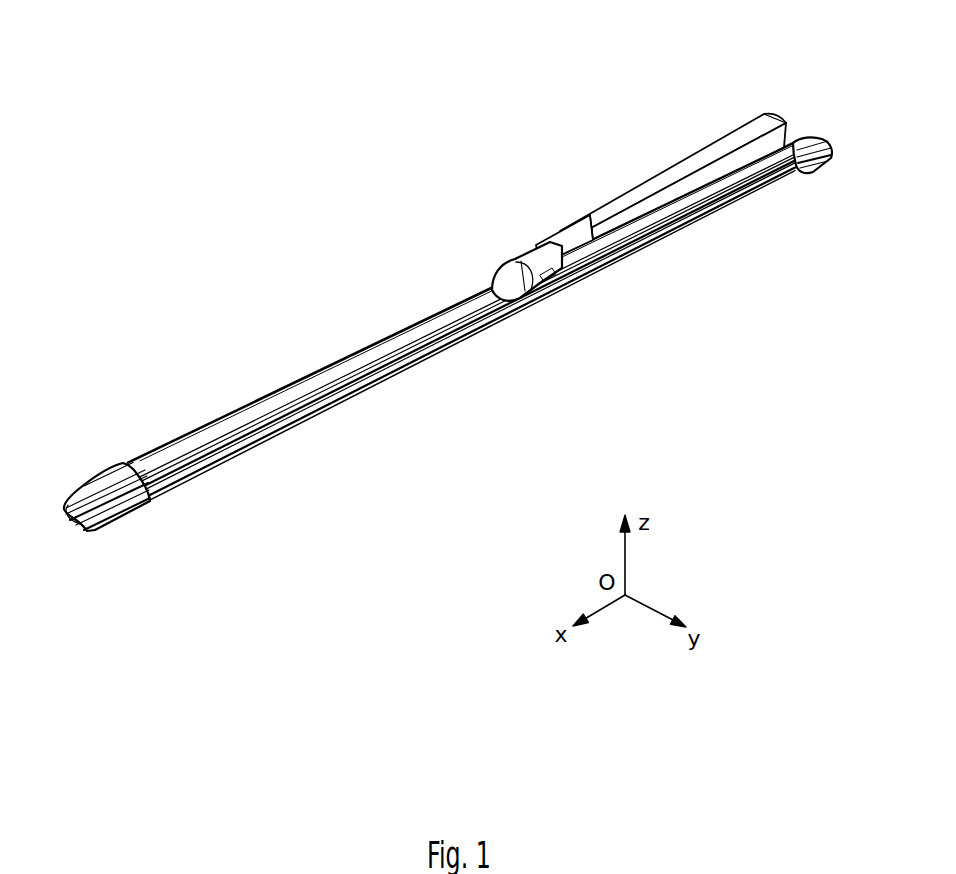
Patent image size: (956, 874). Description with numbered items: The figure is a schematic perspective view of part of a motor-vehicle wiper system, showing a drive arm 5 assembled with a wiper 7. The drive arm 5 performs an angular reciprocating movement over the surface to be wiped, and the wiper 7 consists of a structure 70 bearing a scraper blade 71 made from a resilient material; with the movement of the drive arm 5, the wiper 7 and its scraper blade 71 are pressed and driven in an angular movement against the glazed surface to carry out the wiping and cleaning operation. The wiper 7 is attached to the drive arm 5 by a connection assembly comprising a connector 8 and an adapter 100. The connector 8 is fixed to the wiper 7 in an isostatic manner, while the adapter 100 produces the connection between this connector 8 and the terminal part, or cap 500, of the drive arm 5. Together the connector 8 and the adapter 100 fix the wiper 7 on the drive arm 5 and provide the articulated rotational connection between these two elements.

The drive arm 5 is at (670, 163).
The wiper 7 is at (448, 334).
The connector 8 is at (540, 312).
The structure 70 is at (182, 435).
The scraper blade 71 is at (362, 395).
The adapter 100 is at (497, 281).
The terminal part, or cap, of the drive arm 500 is at (537, 262).